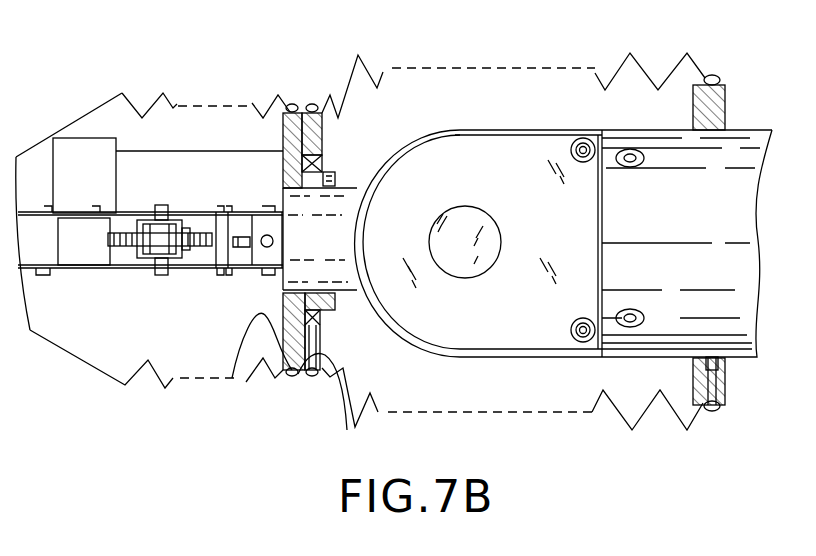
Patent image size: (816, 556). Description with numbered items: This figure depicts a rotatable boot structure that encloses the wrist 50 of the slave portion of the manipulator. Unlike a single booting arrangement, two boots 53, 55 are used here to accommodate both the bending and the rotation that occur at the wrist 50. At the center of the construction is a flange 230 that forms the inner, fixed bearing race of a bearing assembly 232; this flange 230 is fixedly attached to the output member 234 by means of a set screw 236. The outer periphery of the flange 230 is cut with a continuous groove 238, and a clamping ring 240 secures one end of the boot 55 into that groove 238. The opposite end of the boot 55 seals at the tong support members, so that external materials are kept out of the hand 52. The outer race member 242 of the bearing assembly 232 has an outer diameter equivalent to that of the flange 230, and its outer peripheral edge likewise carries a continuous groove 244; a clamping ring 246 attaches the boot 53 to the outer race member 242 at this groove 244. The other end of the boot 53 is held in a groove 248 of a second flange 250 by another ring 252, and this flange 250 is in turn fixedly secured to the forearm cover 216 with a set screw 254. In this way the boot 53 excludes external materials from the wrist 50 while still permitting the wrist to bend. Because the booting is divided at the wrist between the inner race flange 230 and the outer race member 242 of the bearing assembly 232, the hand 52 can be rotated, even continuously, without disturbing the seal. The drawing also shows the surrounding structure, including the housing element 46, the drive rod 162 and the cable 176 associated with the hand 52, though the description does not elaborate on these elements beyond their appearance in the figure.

The housing 46 is at (741, 127).
The wrist 50 is at (305, 382).
The hand 52 is at (87, 135).
The boot 53 is at (650, 415).
The boot 55 is at (113, 378).
The drive rod 162 is at (181, 150).
The cable 176 is at (122, 246).
The forearm cover 216 is at (689, 225).
The flange 230 is at (248, 334).
The bearing assembly 232 is at (324, 320).
The output member 234 is at (349, 296).
The set screw 236 is at (333, 174).
The continuous groove 238 is at (268, 362).
The clamping ring 240 is at (292, 110).
The outer race member 242 is at (323, 132).
The continuous groove 244 is at (338, 405).
The clamping ring 246 is at (311, 112).
The groove 248 is at (722, 82).
The flange 250 is at (727, 392).
The ring 252 is at (716, 408).
The set screw 254 is at (705, 363).